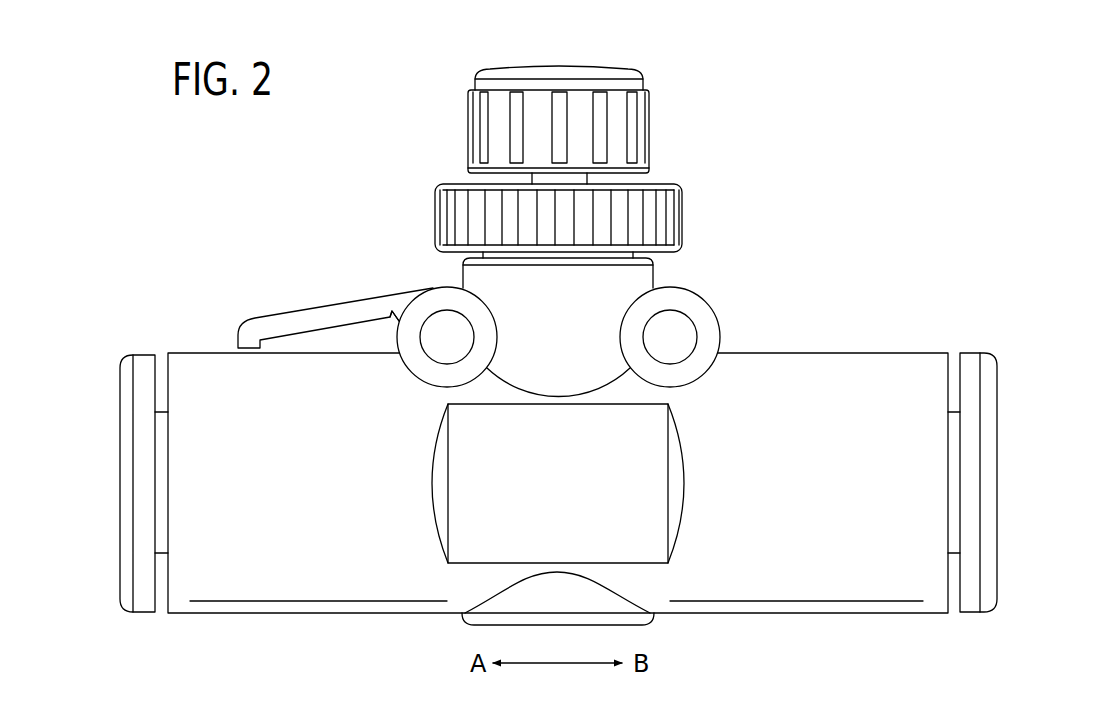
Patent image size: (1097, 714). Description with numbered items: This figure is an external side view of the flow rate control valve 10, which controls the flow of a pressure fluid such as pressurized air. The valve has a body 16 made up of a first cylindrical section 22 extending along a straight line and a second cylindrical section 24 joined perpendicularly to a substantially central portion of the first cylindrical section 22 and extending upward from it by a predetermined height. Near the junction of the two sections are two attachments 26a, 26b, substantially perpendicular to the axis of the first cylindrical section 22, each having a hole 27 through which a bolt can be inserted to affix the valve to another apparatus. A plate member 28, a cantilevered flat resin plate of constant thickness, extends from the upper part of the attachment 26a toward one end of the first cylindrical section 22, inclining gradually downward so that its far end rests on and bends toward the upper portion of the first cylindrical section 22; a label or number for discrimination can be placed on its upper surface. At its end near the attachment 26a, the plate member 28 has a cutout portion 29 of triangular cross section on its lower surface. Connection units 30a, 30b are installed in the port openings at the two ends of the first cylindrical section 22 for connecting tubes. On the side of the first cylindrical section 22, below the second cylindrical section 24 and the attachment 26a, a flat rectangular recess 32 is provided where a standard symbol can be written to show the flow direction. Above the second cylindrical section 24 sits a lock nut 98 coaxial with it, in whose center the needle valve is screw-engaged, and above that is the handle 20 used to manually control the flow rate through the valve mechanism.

The flow rate control valve 10 is at (850, 135).
The body 16 is at (868, 346).
The handle 20 is at (515, 78).
The first cylindrical section 22 is at (822, 578).
The second cylindrical section 24 is at (642, 277).
The attachment 26a is at (415, 357).
The attachment 26b is at (698, 362).
The hole 27 is at (447, 325).
The plate member 28 is at (329, 304).
The cutout portion 29 is at (390, 318).
The connection unit 30a is at (115, 430).
The connection unit 30b is at (1006, 423).
The recess 32 is at (468, 534).
The lock nut 98 is at (670, 221).